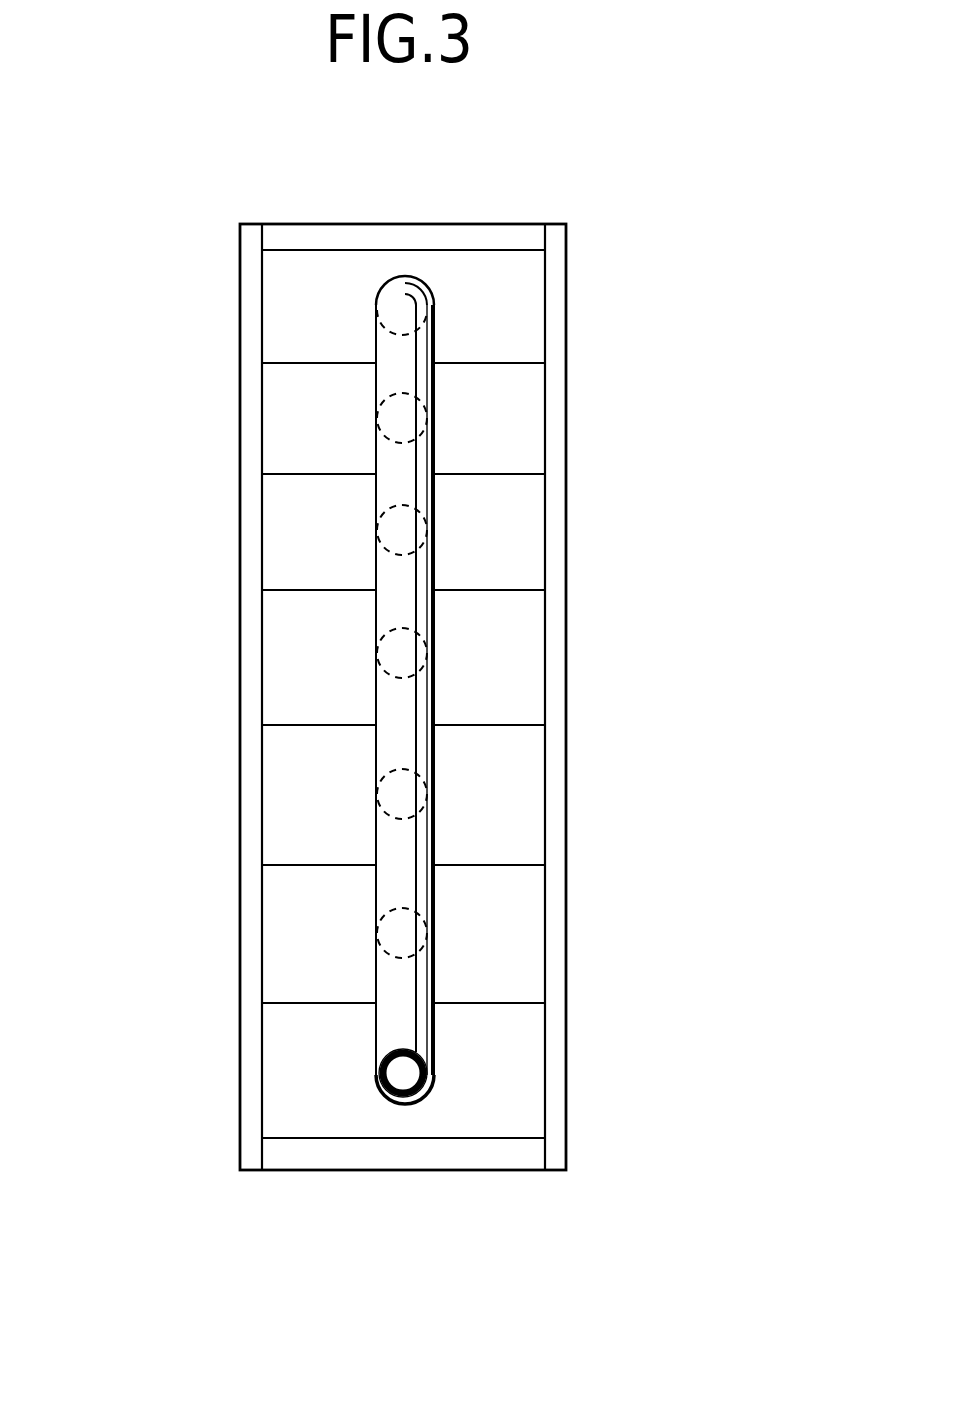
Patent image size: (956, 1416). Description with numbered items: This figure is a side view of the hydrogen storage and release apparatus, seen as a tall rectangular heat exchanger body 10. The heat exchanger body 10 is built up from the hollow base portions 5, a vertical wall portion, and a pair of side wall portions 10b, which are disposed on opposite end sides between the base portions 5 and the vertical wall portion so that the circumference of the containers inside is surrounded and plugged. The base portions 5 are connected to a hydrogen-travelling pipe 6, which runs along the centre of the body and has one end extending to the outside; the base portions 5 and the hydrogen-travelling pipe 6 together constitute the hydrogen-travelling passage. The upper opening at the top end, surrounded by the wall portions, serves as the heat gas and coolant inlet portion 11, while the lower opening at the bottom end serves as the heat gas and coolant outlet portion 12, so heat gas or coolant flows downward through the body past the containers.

The hollow base portion 5 is at (285, 322).
The hydrogen-travelling pipe 6 is at (433, 903).
The heat exchanger body 10 is at (572, 357).
The side wall portion 10b is at (240, 537).
The heat gas and coolant inlet portion 11 is at (502, 217).
The heat gas and coolant outlet portion 12 is at (362, 1178).